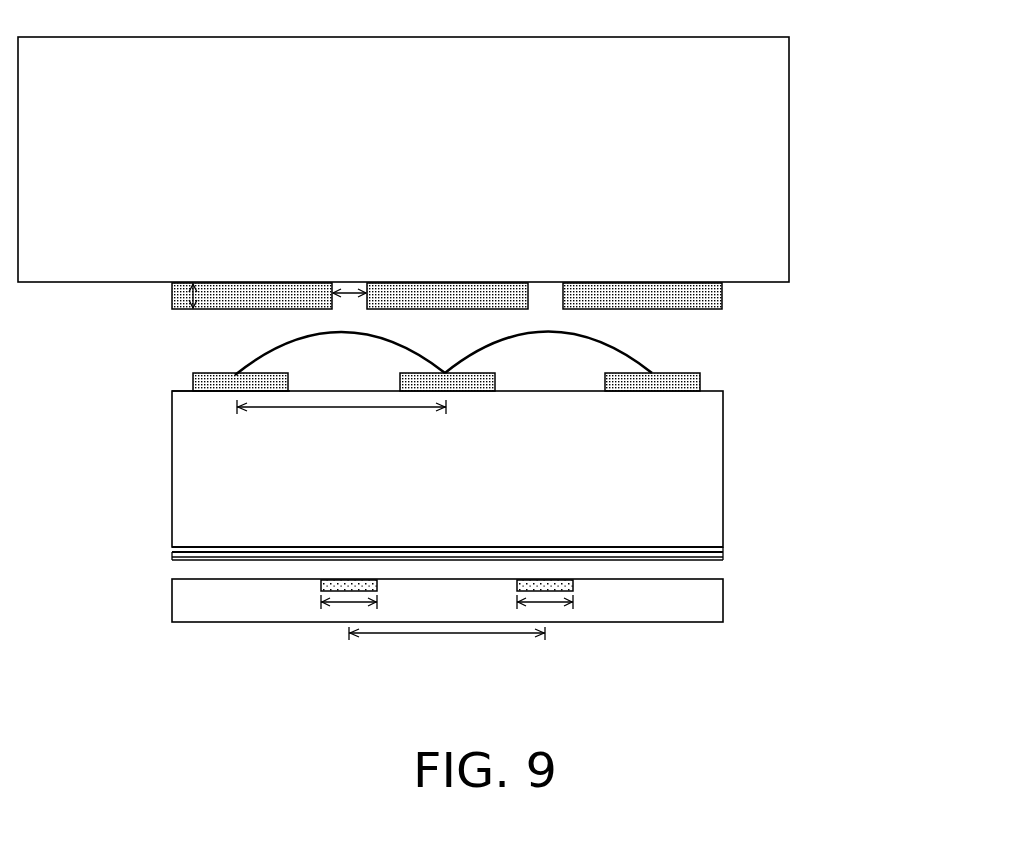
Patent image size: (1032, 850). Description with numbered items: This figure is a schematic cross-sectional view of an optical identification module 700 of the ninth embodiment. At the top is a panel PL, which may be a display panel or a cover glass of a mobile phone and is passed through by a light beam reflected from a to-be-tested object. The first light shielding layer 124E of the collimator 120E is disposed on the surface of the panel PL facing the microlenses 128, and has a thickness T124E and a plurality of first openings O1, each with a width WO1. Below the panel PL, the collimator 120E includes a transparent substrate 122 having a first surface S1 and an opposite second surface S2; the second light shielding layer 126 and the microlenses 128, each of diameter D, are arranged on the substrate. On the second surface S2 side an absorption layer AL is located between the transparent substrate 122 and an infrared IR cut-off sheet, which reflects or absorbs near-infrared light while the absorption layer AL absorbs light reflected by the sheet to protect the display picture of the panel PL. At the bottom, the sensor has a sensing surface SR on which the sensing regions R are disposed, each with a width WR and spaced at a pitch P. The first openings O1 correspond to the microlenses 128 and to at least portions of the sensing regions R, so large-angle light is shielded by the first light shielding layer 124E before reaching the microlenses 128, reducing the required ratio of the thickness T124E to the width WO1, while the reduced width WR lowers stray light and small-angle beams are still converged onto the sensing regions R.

The optical identification module 700 is at (883, 686).
The panel PL is at (784, 160).
The collimator 120E is at (488, 415).
The first light shielding layer 124E is at (722, 300).
The thickness of the first light shielding layer T124E is at (174, 297).
The width of the first opening WO1 is at (350, 296).
The first opening O1 is at (541, 299).
The microlens 128 is at (613, 360).
The second light shielding layer 126 is at (700, 383).
The transparent substrate 122 is at (688, 474).
The first surface S1 is at (187, 390).
The diameter D is at (270, 408).
The absorption layer AL is at (172, 550).
The infrared cut-off sheet IR is at (172, 557).
The second surface S2 is at (203, 549).
The sensing surface SR is at (565, 578).
The sensing region R is at (379, 583).
The width of the sensing region WR is at (342, 605).
The pitch P is at (445, 634).